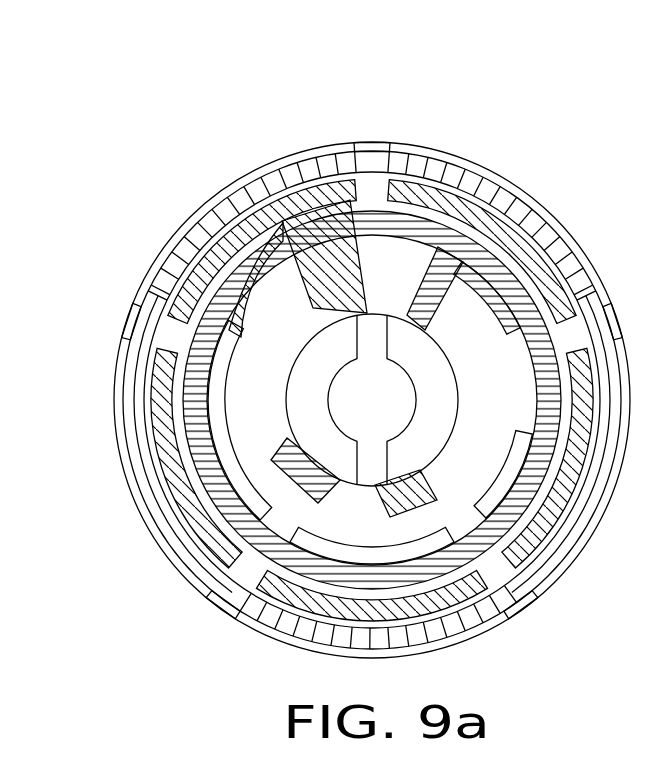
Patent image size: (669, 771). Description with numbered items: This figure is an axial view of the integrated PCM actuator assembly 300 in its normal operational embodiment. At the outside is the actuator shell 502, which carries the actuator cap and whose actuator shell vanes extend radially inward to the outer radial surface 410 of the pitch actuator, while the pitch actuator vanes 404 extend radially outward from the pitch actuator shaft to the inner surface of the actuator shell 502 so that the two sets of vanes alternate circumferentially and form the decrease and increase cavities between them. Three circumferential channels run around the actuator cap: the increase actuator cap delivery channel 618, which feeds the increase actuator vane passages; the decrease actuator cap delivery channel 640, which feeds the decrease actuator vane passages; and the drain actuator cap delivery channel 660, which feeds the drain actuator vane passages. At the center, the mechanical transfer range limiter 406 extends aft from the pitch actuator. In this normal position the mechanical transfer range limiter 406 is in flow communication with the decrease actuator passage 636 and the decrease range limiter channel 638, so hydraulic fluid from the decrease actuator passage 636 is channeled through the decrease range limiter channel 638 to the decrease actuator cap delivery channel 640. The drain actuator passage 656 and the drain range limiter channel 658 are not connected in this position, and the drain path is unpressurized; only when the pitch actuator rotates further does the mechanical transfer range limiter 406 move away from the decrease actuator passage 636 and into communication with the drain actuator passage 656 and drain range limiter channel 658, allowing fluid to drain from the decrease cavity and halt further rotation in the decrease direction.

The integrated PCM actuator assembly 300 is at (200, 161).
The actuator shell 502 is at (260, 153).
The pitch actuator vanes 404 is at (370, 140).
The increase actuator cap delivery channel 618 is at (416, 150).
The drain actuator cap delivery channel 660 is at (447, 212).
The decrease actuator cap delivery channel 640 is at (483, 253).
The outer radial surface 410 is at (235, 462).
The mechanical transfer range limiter 406 is at (399, 406).
The decrease range limiter channel 638 is at (330, 306).
The drain range limiter channel 658 is at (437, 293).
The drain actuator passage 656 is at (285, 445).
The decrease actuator passage 636 is at (412, 488).